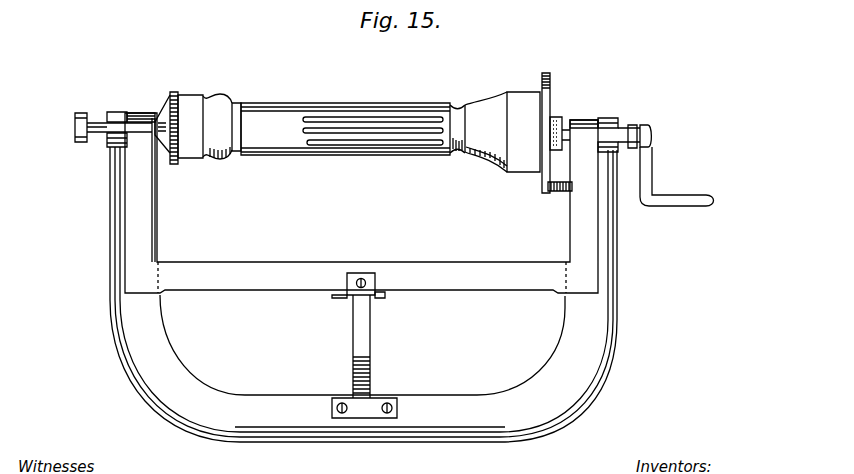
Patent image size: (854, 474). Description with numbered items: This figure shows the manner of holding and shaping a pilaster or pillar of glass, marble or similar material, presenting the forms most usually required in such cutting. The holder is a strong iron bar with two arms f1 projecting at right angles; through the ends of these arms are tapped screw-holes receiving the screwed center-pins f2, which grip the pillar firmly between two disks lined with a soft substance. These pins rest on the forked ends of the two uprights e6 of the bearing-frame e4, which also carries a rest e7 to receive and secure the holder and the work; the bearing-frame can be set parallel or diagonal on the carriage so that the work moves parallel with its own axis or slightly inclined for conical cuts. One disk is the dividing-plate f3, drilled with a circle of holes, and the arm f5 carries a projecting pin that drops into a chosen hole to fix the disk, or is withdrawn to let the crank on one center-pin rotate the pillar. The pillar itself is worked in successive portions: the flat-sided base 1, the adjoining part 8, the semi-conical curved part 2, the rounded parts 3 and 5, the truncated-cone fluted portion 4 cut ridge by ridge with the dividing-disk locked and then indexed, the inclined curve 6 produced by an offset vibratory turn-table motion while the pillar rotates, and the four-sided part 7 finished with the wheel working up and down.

The base 1 is at (523, 120).
The semi-conical curved part 2 is at (486, 125).
The rounded part 3 is at (457, 118).
The conical fluted portion 4 is at (345, 116).
The rounded part 5 is at (236, 118).
The inclined curve 6 is at (217, 119).
The four-sided part 7 is at (195, 120).
The part adjoining the base 8 is at (173, 123).
The holder arms f1 is at (361, 193).
The screwed center-pins f2 is at (97, 127).
The dividing-plate disk f3 is at (555, 118).
The arm with projecting pin f5 is at (556, 198).
The bearing-frame e4 is at (363, 294).
The uprights e6 is at (408, 150).
The rest e7 is at (364, 345).